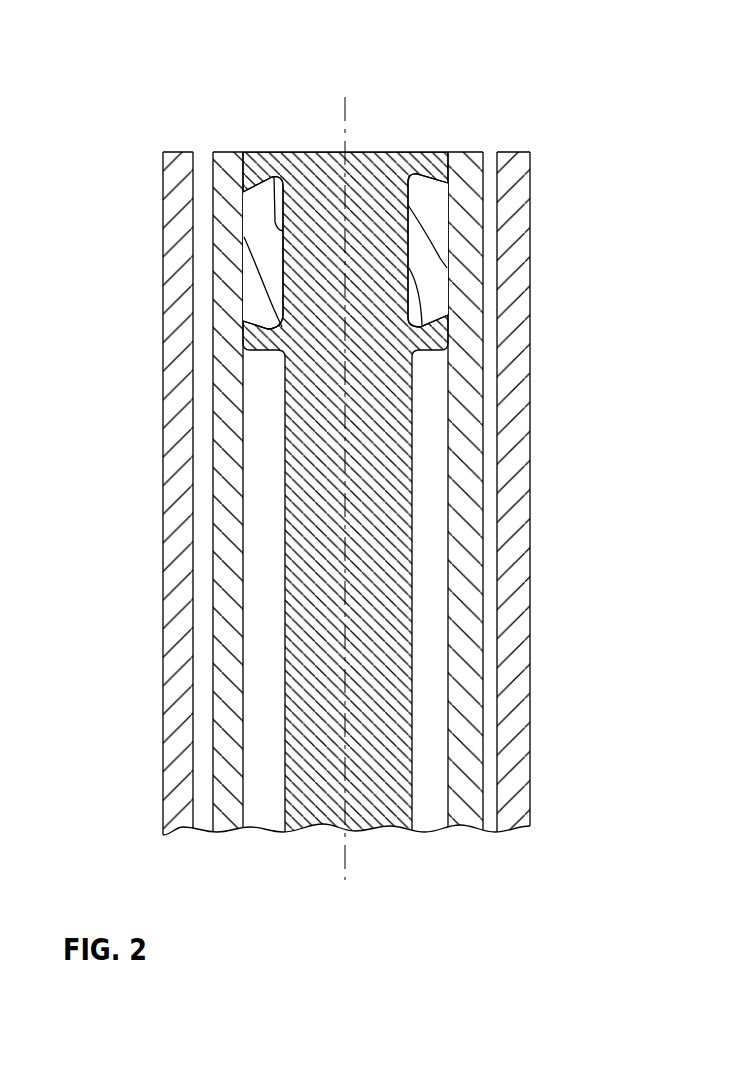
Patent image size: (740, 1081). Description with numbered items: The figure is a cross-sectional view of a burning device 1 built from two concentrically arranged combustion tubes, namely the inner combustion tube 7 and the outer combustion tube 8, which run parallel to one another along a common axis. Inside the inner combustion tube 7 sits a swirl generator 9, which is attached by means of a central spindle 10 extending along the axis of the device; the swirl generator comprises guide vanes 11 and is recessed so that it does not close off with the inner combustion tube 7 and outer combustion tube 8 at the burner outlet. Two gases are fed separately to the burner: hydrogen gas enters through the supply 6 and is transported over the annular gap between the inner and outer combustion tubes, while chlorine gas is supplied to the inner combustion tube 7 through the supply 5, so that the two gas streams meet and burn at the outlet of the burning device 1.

The burning device 1 is at (588, 142).
The chlorine gas supply 5 is at (429, 813).
The hydrogen gas supply 6 is at (203, 698).
The inner combustion tube 7 is at (463, 650).
The outer combustion tube 8 is at (515, 377).
The swirl generator 9 is at (385, 258).
The spindle 10 is at (317, 403).
The guide vanes 11 is at (265, 229).